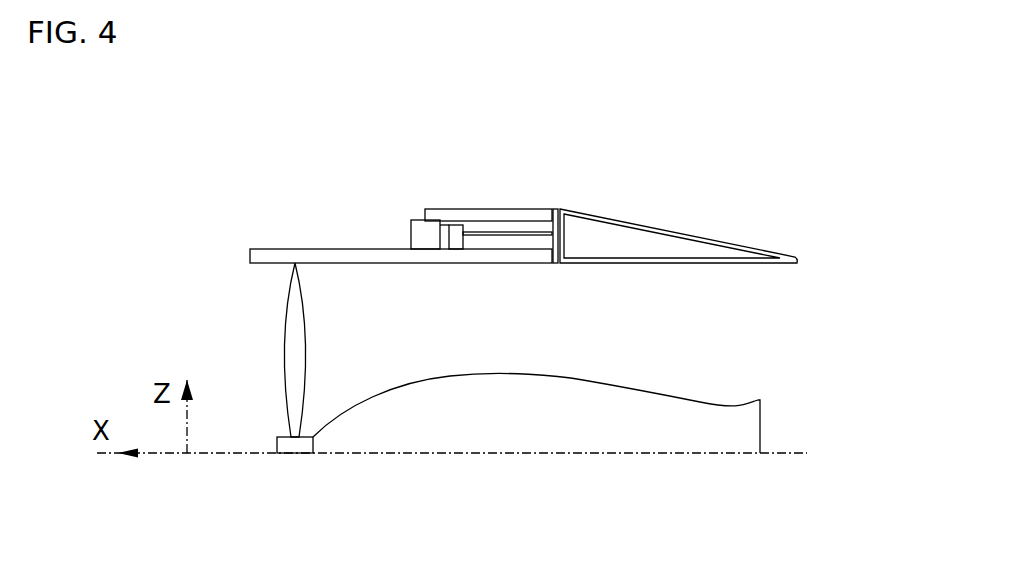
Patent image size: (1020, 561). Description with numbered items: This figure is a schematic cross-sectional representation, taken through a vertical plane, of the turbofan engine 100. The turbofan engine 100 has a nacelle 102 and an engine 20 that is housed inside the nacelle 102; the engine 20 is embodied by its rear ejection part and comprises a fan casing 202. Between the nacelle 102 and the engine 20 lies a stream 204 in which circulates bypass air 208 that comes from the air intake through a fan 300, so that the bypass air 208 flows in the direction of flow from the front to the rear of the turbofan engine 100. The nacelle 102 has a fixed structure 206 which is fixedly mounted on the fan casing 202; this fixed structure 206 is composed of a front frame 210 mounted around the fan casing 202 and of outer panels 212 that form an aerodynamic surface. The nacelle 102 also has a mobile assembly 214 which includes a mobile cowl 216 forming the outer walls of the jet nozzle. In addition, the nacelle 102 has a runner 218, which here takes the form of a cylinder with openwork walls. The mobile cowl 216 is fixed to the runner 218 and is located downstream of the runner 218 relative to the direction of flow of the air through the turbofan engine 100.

The turbofan engine 100 is at (767, 140).
The nacelle 102 is at (627, 150).
The fan casing 202 is at (262, 255).
The stream 204 is at (375, 308).
The fixed structure 206 is at (297, 145).
The bypass air 208 is at (408, 331).
The front frame 210 is at (425, 232).
The outer panels 212 is at (485, 215).
The mobile assembly 214 is at (773, 223).
The mobile cowl 216 is at (680, 247).
The runner 218 is at (452, 236).
The fan 300 is at (293, 348).
The engine 20 is at (752, 403).